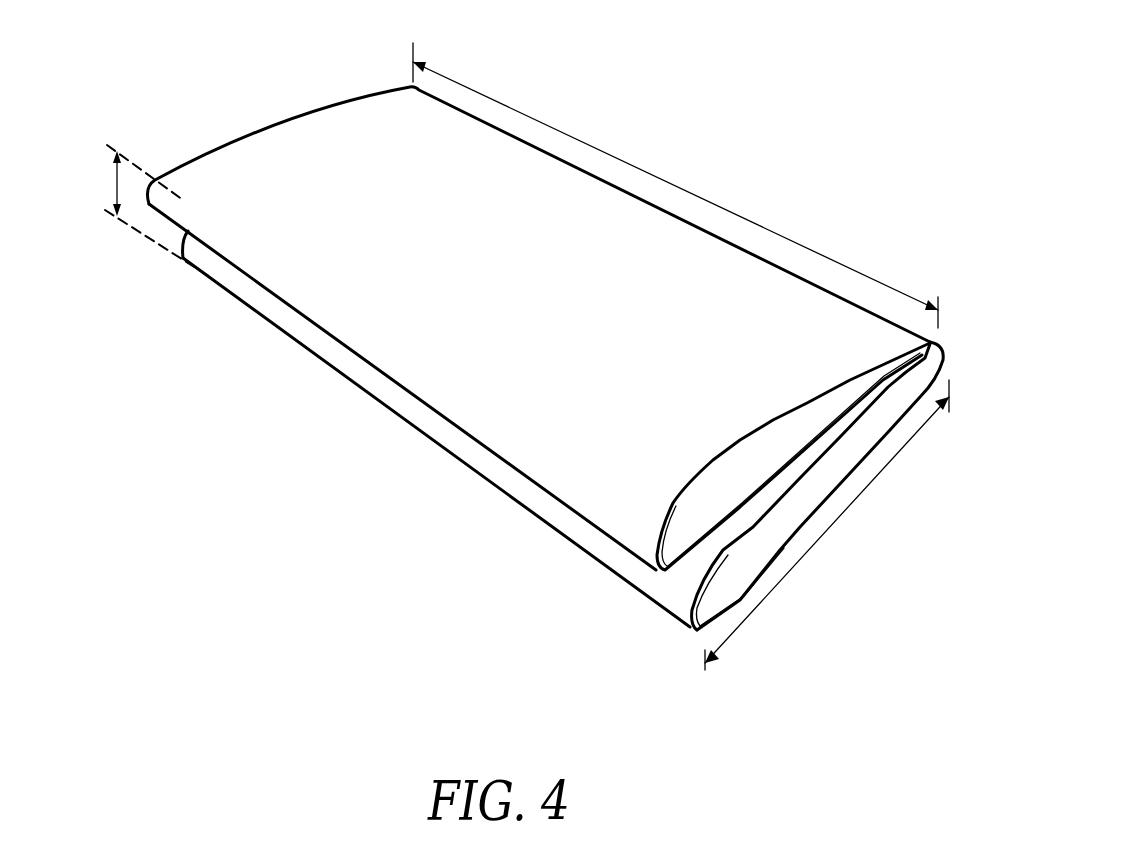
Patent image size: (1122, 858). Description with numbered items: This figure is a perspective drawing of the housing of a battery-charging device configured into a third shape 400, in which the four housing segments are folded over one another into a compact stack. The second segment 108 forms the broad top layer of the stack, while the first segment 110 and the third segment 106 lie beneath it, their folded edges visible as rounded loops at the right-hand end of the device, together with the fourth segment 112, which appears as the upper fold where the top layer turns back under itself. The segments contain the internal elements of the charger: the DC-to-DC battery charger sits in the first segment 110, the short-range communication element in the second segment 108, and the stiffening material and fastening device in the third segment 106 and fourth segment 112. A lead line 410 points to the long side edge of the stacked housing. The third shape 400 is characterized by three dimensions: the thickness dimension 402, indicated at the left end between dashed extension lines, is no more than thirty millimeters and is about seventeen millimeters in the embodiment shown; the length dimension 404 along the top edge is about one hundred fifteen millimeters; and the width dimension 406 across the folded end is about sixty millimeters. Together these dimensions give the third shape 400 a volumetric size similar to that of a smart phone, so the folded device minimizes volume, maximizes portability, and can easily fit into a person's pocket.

The third shape 400 is at (234, 66).
The second segment 108 is at (345, 123).
The side edge of top layer 410 is at (407, 344).
The fourth segment 112 is at (873, 397).
The first segment 110 is at (793, 537).
The third segment 106 is at (723, 490).
The dimension 402 is at (115, 185).
The dimension 404 is at (770, 230).
The dimension 406 is at (853, 500).